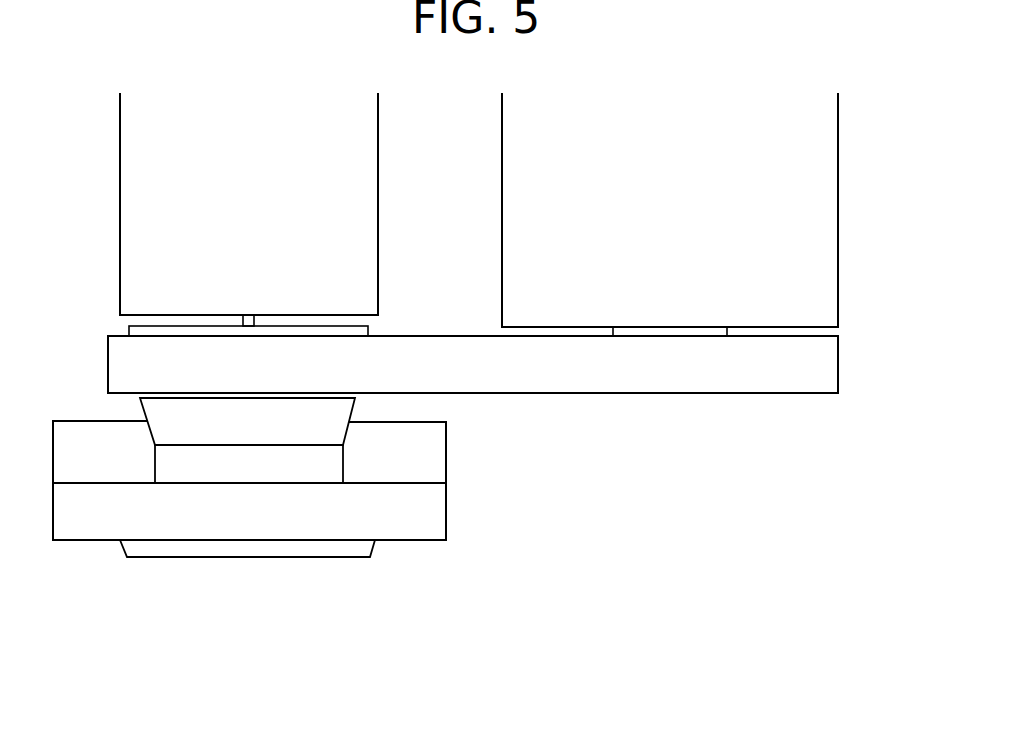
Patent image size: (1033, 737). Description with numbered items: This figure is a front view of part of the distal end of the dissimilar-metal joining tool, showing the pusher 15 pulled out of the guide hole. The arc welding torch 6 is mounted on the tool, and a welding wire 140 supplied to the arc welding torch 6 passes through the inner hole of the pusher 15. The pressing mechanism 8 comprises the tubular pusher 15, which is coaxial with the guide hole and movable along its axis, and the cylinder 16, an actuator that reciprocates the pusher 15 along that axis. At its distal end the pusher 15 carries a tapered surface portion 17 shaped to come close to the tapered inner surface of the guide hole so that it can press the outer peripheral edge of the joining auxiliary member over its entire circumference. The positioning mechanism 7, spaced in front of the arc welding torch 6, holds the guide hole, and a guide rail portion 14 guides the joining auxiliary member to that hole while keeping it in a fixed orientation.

The arc welding torch 6 is at (120, 185).
The cylinder 16 is at (838, 222).
The pressing mechanism 8 is at (552, 446).
The welding wire 140 is at (243, 319).
The pusher 15 is at (331, 308).
The tapered surface portion 17 is at (355, 407).
The positioning mechanism 7 is at (399, 565).
The guide rail portion 14 is at (342, 541).